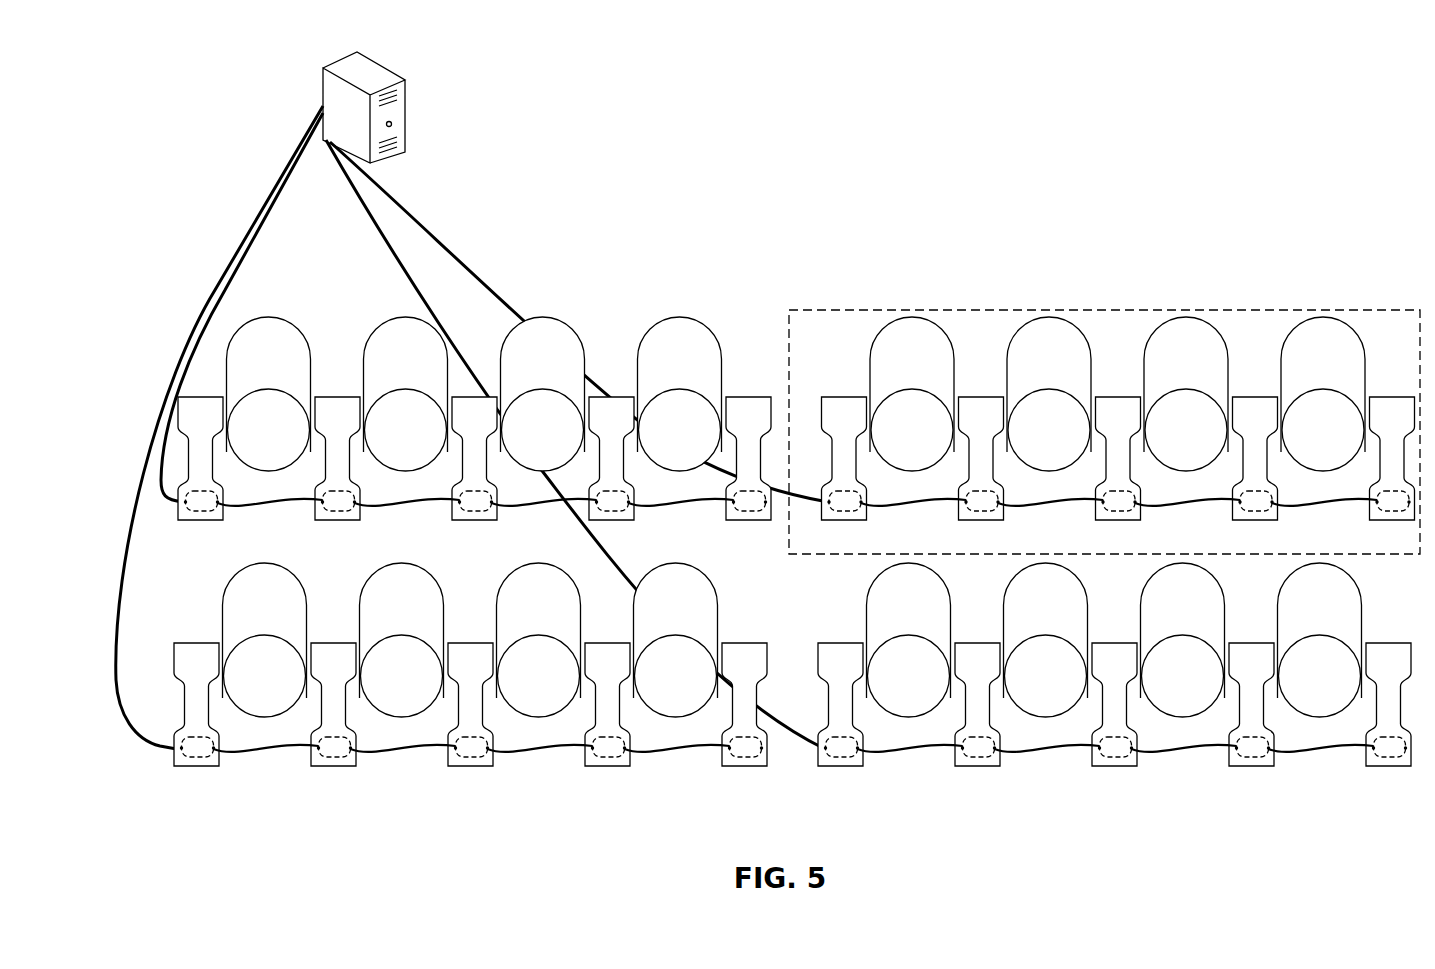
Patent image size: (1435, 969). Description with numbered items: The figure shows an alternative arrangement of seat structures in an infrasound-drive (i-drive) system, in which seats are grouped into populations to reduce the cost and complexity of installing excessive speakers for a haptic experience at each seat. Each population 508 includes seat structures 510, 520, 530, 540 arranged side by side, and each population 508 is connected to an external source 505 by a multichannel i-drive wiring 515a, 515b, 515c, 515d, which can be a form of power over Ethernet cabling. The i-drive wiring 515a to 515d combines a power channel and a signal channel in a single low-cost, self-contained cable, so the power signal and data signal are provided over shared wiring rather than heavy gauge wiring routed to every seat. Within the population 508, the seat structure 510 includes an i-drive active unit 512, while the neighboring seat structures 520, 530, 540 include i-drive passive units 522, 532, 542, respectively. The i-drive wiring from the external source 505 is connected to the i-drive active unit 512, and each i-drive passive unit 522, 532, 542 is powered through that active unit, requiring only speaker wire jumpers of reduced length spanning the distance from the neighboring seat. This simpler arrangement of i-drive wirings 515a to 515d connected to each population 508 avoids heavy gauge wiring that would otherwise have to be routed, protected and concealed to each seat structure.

The external source 505 is at (397, 68).
The population 508 is at (1342, 307).
The seat structure 510 is at (887, 384).
The i-drive active unit 512 is at (893, 523).
The i-drive wiring 515a is at (250, 222).
The i-drive wiring 515b is at (240, 258).
The i-drive wiring 515c is at (403, 265).
The i-drive wiring 515d is at (485, 288).
The seat structure 520 is at (1020, 379).
The i-drive passive unit 522 is at (961, 356).
The seat structure 530 is at (1155, 379).
The i-drive passive unit 532 is at (1094, 356).
The seat structure 540 is at (1300, 379).
The i-drive passive unit 542 is at (1231, 356).